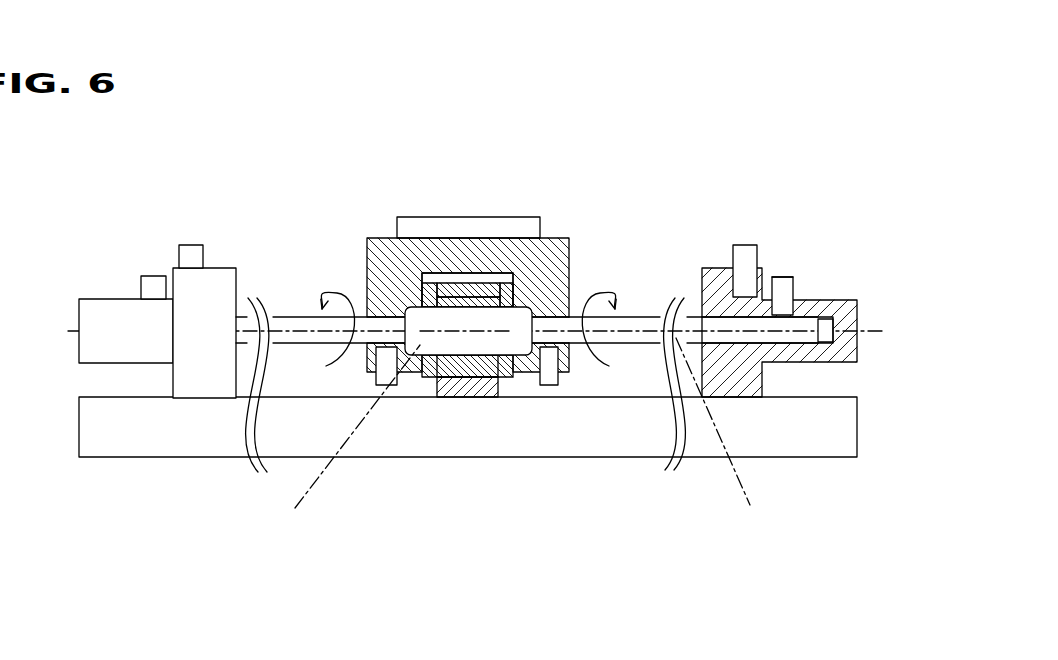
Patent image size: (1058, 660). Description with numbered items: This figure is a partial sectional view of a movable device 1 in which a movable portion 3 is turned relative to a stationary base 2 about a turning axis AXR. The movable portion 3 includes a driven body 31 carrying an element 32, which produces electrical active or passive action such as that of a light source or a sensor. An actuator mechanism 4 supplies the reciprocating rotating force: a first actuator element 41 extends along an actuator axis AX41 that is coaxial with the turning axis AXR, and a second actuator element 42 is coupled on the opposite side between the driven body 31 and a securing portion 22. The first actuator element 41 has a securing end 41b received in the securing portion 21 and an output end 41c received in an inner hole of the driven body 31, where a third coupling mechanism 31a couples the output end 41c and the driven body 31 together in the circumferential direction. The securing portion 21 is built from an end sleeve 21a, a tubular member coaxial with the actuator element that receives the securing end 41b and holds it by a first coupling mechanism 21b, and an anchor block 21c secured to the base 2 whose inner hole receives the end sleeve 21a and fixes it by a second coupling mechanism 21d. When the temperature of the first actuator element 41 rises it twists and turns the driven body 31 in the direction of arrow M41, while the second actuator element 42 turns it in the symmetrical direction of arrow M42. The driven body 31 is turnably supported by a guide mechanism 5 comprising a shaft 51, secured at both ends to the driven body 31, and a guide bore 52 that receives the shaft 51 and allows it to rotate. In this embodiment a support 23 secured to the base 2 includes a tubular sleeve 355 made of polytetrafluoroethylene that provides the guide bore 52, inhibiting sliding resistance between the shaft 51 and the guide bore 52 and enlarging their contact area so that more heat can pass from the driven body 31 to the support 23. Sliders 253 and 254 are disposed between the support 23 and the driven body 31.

The movable device 1 is at (824, 259).
The base 2 is at (860, 460).
The movable portion 3 is at (465, 331).
The actuator mechanism 4 is at (548, 336).
The guide mechanism 5 is at (446, 428).
The securing portion 21 is at (828, 275).
The end sleeve 21a is at (833, 302).
The first coupling mechanism 21b is at (793, 277).
The anchor block 21c is at (760, 277).
The second coupling mechanism 21d is at (748, 245).
The securing portion 22 is at (137, 242).
The support 23 is at (498, 380).
The driven body 31 is at (383, 238).
The third coupling mechanism 31a is at (553, 387).
The element 32 is at (527, 217).
The first actuator element 41 is at (696, 368).
The securing end 41b is at (790, 334).
The output end 41c is at (573, 340).
The second actuator element 42 is at (272, 295).
The shaft 51 is at (458, 340).
The guide bore 52 is at (487, 362).
The slider 253 is at (435, 277).
The slider 254 is at (512, 283).
The sleeve 355 is at (472, 303).
The arrow M41 is at (604, 311).
The arrow M42 is at (331, 309).
The turning axis AXR is at (341, 447).
The actuator axis AX41 is at (733, 443).